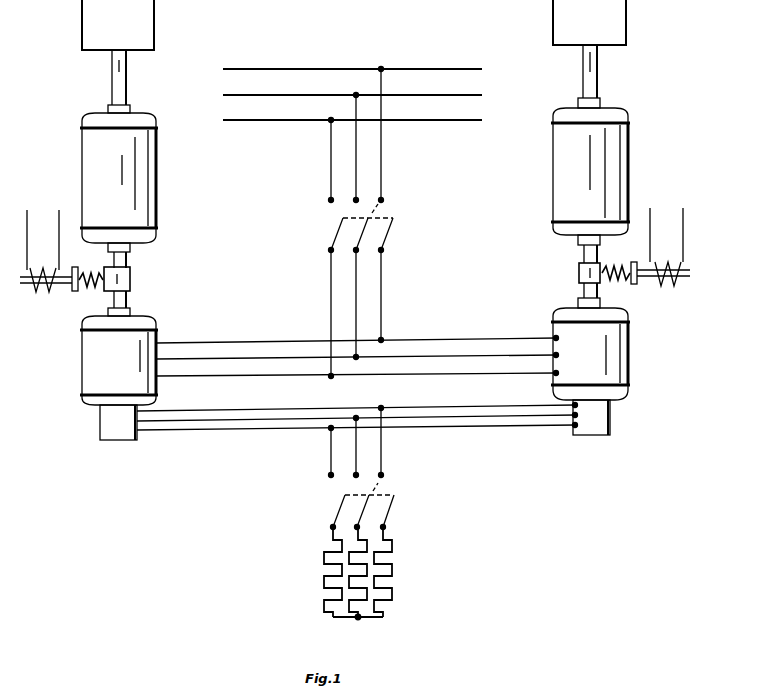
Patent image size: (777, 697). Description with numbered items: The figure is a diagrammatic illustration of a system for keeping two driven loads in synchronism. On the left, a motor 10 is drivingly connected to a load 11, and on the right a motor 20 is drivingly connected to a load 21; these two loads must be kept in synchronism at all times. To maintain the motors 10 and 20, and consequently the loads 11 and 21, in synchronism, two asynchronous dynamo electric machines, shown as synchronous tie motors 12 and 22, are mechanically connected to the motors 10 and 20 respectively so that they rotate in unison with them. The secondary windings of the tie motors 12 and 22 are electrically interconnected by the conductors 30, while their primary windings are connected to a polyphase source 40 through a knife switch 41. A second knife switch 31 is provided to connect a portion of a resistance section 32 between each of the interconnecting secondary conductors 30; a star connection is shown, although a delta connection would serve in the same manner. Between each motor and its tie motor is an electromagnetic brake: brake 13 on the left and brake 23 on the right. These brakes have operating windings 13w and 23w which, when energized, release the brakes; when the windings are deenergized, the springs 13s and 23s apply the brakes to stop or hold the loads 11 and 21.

The motor 10 is at (155, 194).
The load 11 is at (152, 26).
The synchronous tie motor 12 is at (90, 367).
The electromagnetic brake 13 is at (51, 311).
The spring 13s is at (95, 266).
The operating winding 13w is at (43, 251).
The motor 20 is at (617, 171).
The load 21 is at (622, 23).
The synchronous tie motor 22 is at (614, 366).
The electromagnetic brake 23 is at (671, 306).
The spring 23s is at (622, 262).
The operating winding 23w is at (666, 247).
The conductors 30 is at (243, 429).
The knife switch 31 is at (388, 513).
The resistance section 32 is at (310, 591).
The polyphase source 40 is at (220, 105).
The knife switch 41 is at (386, 238).